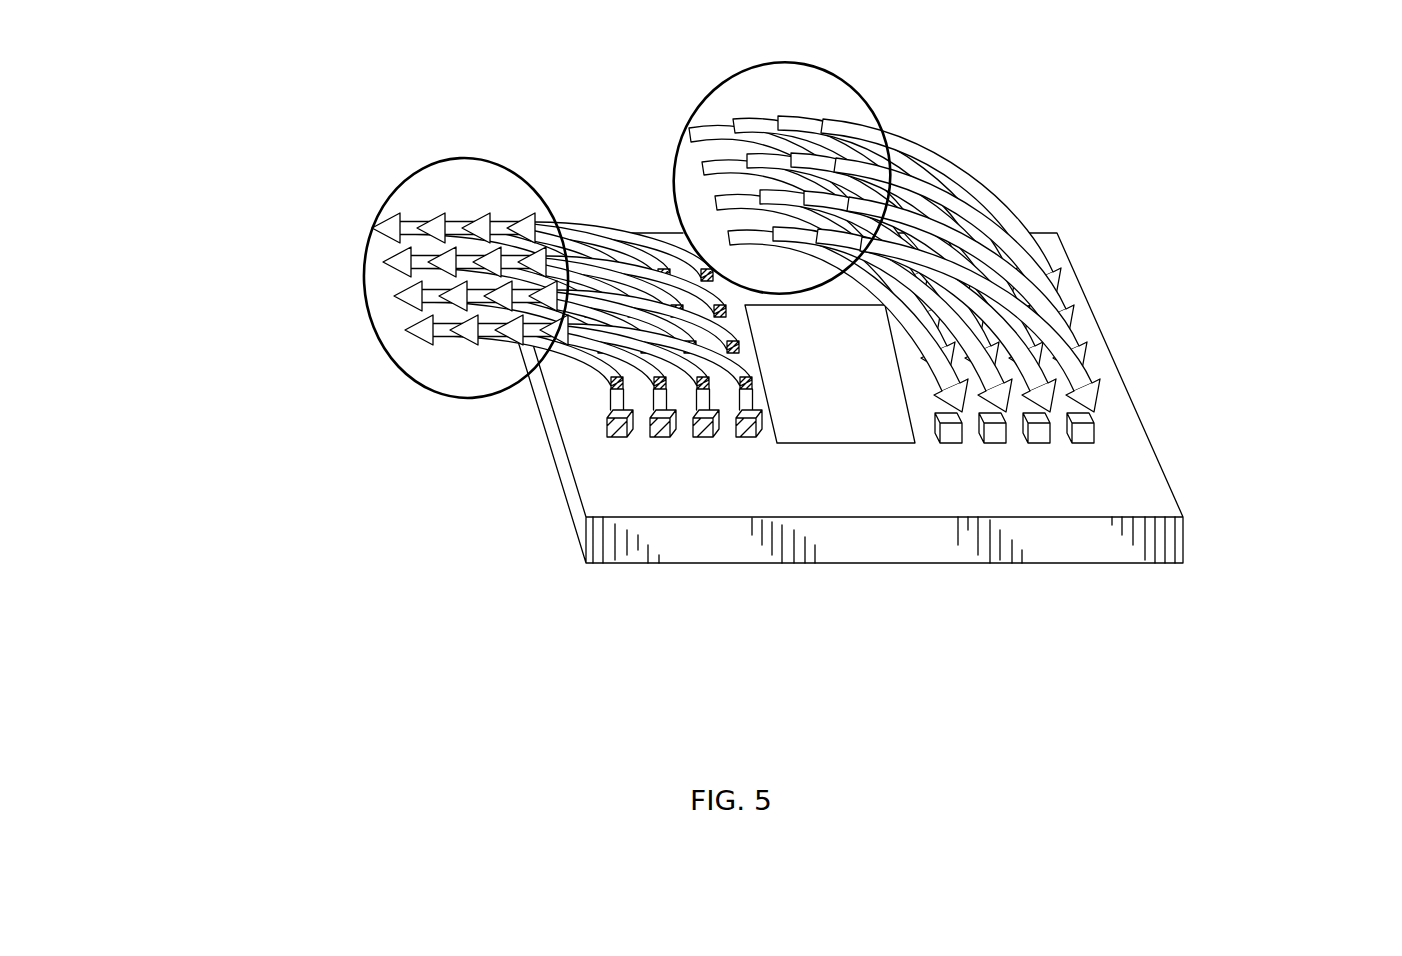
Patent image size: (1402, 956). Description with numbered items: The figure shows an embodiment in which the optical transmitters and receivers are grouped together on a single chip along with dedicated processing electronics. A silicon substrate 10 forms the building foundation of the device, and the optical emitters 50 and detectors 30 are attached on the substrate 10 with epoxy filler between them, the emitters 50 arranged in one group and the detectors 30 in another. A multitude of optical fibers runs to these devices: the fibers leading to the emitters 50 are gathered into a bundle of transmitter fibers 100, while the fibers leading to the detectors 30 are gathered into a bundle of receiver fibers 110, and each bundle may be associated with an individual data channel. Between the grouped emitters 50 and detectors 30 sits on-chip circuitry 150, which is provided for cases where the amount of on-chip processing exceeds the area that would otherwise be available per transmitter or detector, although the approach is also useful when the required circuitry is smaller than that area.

The silicon substrate 10 is at (1158, 542).
The detector 30 is at (1092, 422).
The emitter 50 is at (604, 417).
The bundle of transmitter fibers 100 is at (482, 400).
The bundle of receiver fibers 110 is at (843, 76).
The on-chip circuitry 150 is at (827, 408).